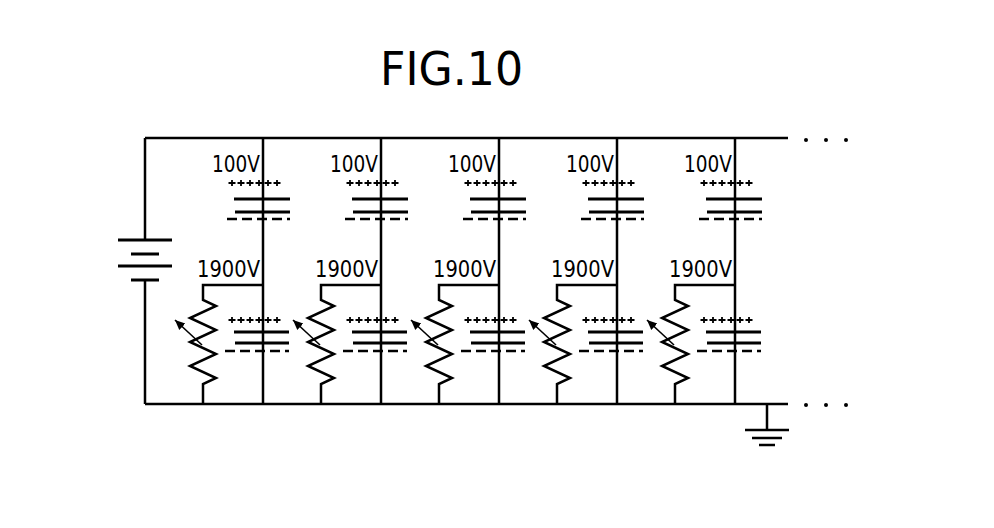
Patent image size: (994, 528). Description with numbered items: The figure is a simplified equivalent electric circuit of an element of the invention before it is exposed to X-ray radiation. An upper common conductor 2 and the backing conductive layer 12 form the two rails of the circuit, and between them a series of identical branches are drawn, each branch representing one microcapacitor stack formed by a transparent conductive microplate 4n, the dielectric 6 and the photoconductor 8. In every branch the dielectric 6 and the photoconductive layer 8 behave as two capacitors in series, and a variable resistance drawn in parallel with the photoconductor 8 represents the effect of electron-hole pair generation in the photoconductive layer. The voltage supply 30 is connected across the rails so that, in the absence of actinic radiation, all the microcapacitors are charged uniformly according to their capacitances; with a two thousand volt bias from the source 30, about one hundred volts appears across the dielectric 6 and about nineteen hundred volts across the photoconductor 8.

The upper common conductor line 2 is at (750, 138).
The upper plate of charged capacitor element 4n is at (758, 199).
The dielectric layer 6 is at (765, 207).
The photoconductive layer 8 is at (702, 375).
The backing conductive layer 12 is at (715, 406).
The voltage supply 30 is at (123, 295).